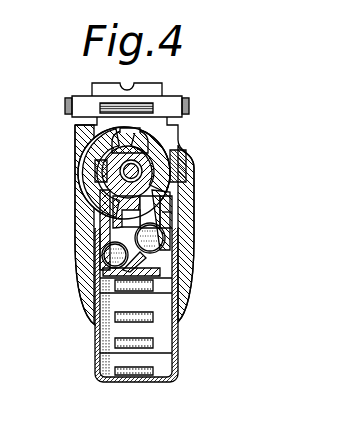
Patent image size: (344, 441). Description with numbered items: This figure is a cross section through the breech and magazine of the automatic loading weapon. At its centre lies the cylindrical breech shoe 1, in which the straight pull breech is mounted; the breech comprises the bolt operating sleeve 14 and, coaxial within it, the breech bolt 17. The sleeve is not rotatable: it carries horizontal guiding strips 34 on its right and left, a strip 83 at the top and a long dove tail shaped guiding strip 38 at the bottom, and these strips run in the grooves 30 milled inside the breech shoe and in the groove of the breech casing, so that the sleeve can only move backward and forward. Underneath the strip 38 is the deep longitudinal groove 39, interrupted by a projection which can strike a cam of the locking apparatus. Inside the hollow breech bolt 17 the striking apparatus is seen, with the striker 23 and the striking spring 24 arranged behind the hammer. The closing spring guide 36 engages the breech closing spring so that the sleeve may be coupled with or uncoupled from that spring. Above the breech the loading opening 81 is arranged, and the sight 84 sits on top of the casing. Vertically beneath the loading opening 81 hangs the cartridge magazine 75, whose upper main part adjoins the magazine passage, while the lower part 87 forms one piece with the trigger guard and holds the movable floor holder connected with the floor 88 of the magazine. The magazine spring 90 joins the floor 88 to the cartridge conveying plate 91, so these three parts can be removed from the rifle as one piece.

The breech shoe 1 is at (109, 213).
The bolt operating sleeve 14 is at (81, 163).
The breech bolt 17 is at (89, 147).
The striker 23 is at (178, 143).
The striking spring 24 is at (190, 192).
The grooves 30 is at (92, 174).
The guiding strips 34 is at (90, 186).
The closing spring guide 36 is at (193, 159).
The guiding strip 38 is at (106, 217).
The groove 39 is at (148, 215).
The cartridge magazine 75 is at (98, 261).
The loading opening 81 is at (145, 128).
The strip 83 is at (128, 133).
The sight 84 is at (97, 93).
The lower part of magazine 87 is at (179, 338).
The floor of the magazine 88 is at (147, 378).
The magazine spring 90 is at (115, 343).
The cartridge conveying plate 91 is at (160, 263).